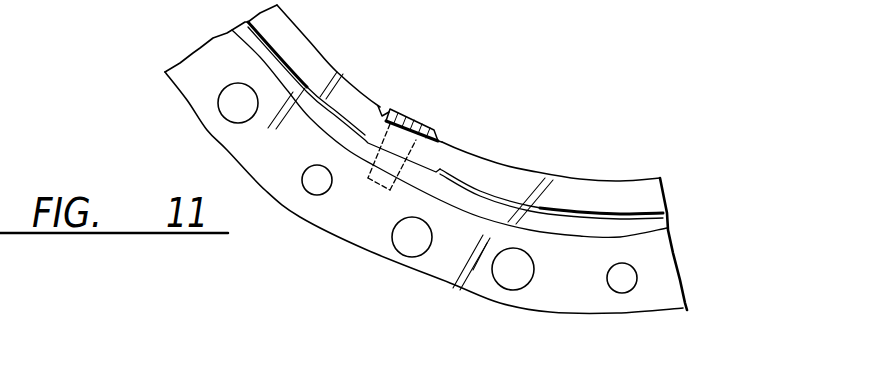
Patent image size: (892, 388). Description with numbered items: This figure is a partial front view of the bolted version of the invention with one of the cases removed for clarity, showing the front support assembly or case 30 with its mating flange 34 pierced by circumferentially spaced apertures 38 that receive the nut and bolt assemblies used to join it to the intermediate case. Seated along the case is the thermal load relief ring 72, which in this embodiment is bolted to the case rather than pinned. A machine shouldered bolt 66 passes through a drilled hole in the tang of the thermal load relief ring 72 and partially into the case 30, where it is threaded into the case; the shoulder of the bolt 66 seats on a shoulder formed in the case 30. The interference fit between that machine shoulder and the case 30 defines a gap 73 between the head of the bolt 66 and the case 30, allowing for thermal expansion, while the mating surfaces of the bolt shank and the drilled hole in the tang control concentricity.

The front support assembly or case 30 is at (615, 315).
The mating flange 34 is at (683, 280).
The circumferentially spaced apertures 38 is at (397, 246).
The thermal load relief ring 72 is at (535, 170).
The machine shouldered bolt 66 is at (420, 122).
The gap 73 is at (390, 107).